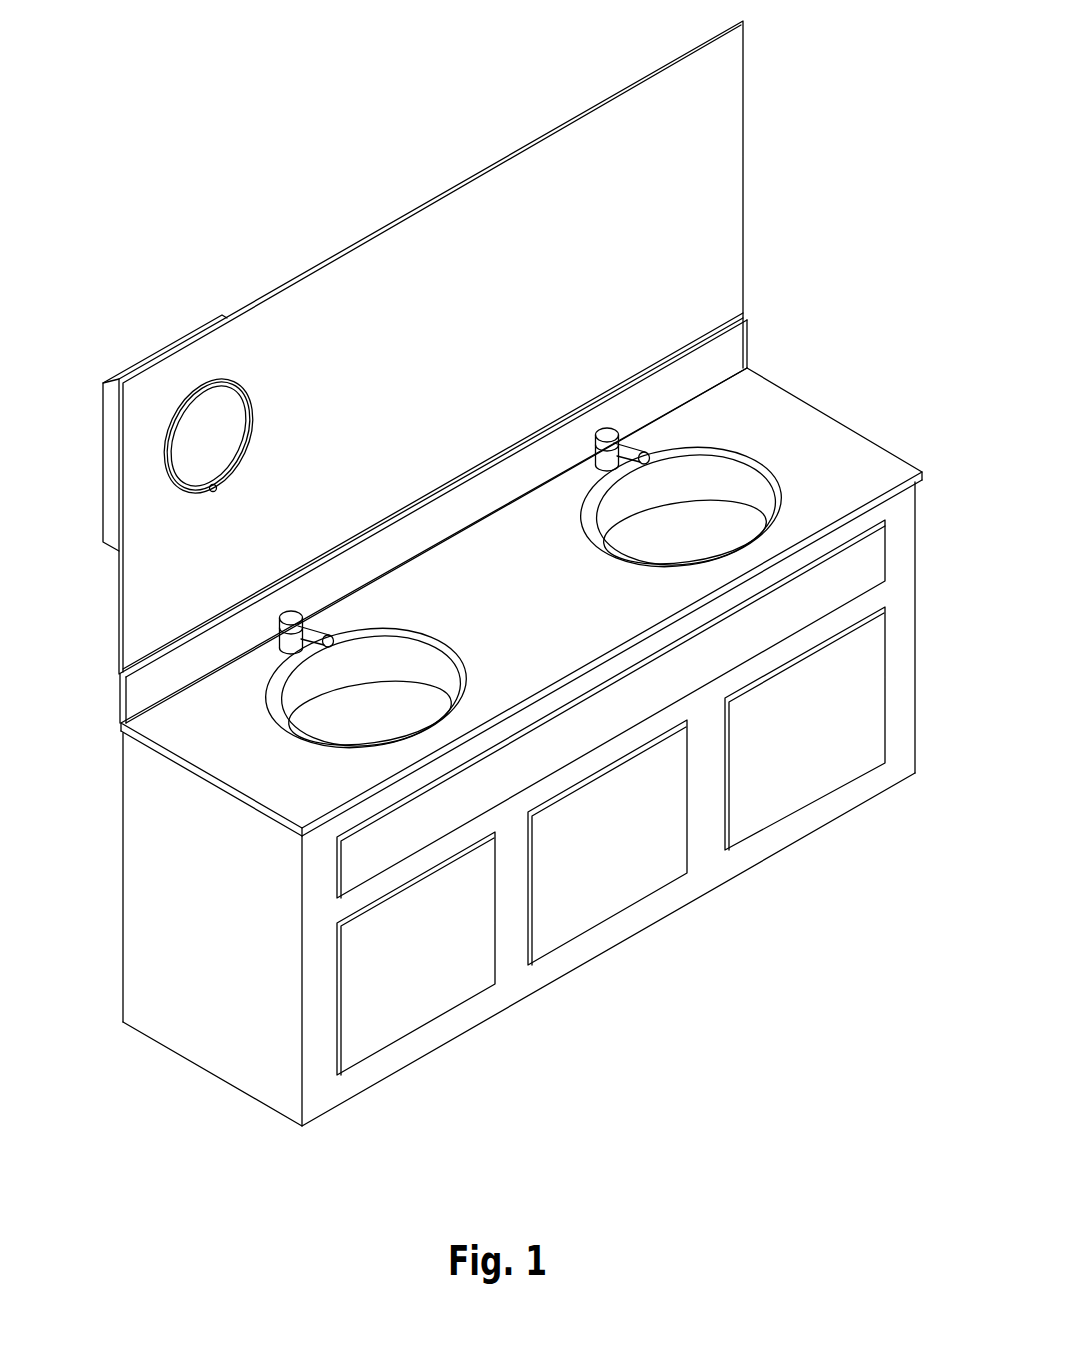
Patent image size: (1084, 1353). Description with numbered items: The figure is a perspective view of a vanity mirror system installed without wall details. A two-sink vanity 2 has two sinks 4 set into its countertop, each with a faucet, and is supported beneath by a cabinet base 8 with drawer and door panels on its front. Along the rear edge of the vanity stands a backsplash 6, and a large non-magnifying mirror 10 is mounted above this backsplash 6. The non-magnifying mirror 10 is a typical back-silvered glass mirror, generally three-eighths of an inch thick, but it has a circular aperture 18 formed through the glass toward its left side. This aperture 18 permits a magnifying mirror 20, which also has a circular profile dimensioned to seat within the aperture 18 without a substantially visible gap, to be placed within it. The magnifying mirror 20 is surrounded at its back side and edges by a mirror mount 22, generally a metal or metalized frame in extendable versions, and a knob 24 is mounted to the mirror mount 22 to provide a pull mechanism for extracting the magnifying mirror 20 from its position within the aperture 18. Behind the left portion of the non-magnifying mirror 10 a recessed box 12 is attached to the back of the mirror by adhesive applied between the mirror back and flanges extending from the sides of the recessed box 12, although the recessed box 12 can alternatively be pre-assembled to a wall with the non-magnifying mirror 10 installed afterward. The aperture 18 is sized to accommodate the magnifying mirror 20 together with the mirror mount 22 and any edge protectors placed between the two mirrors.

The two-sink vanity 2 is at (863, 445).
The sinks 4 is at (686, 536).
The backsplash 6 is at (738, 352).
The cabinet base 8 is at (917, 665).
The non-magnifying mirror 10 is at (732, 93).
The recessed box 12 is at (108, 515).
The circular aperture 18 is at (252, 403).
The magnifying mirror 20 is at (218, 446).
The mirror mount 22 is at (250, 435).
The knob 24 is at (215, 491).